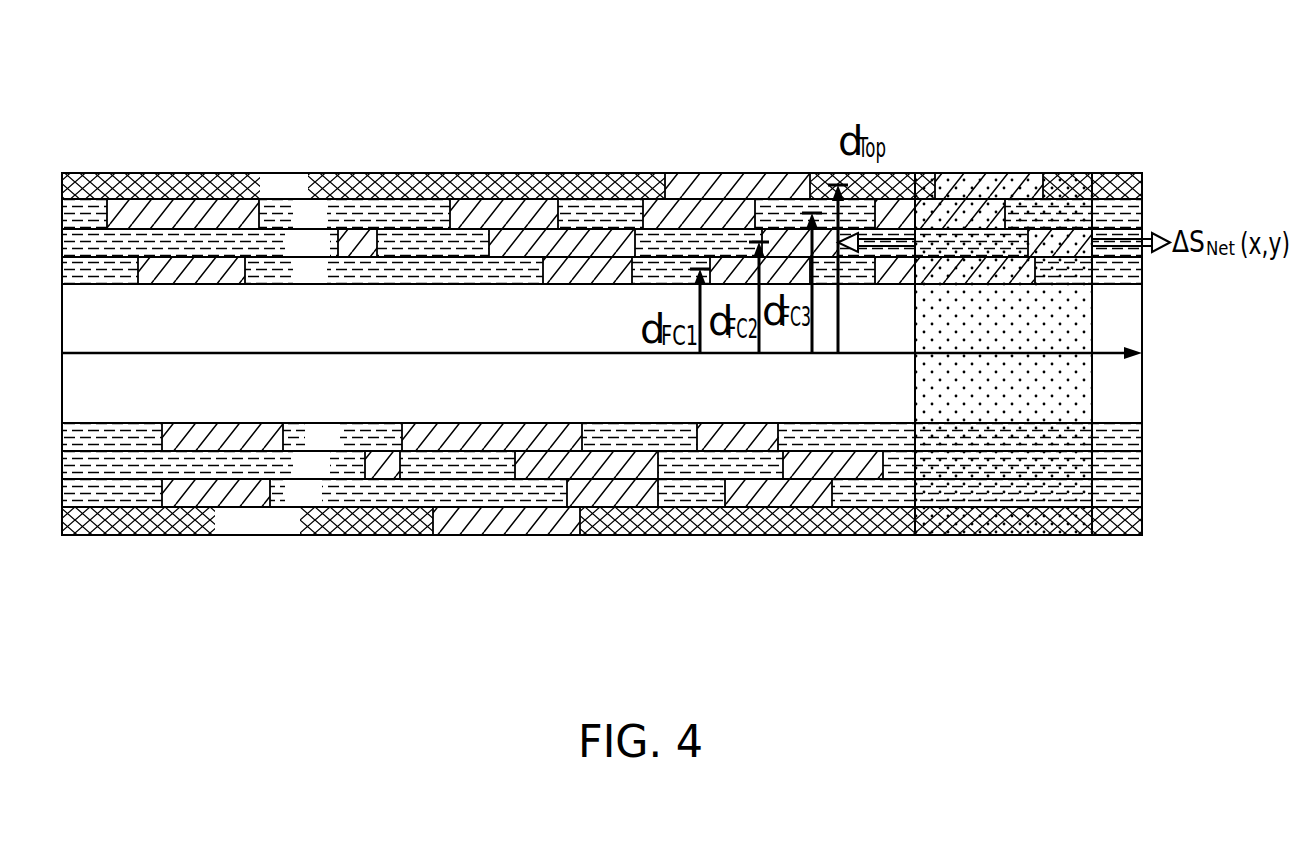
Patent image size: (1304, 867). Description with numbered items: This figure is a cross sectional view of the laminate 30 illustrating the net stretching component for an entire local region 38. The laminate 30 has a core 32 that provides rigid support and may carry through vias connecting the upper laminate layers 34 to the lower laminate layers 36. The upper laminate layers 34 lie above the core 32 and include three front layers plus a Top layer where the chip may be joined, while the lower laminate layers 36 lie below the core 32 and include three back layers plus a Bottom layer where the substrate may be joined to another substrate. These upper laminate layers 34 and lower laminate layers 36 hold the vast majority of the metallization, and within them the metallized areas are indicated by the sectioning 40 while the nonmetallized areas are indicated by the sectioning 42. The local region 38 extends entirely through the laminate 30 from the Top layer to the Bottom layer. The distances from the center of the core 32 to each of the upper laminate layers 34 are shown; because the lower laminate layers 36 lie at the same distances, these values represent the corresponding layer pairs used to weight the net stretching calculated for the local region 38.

The laminate 30 is at (168, 120).
The core 32 is at (72, 325).
The upper laminate layers 34 is at (60, 173).
The lower laminate layers 36 is at (60, 423).
The local region 38 is at (1092, 158).
The metallized area sectioning 40 is at (687, 187).
The nonmetallized area sectioning 42 is at (606, 212).